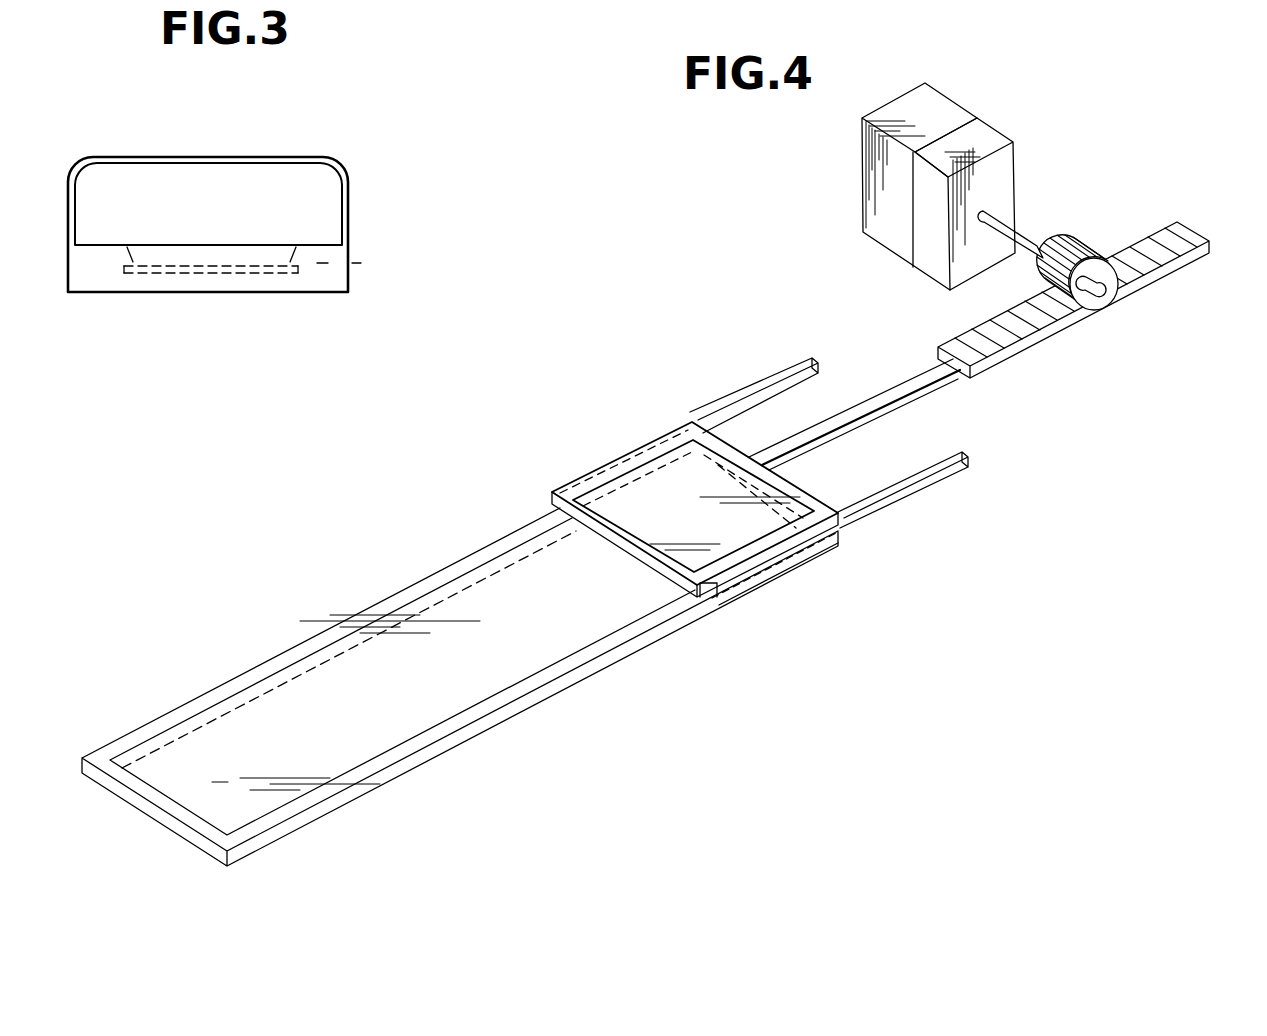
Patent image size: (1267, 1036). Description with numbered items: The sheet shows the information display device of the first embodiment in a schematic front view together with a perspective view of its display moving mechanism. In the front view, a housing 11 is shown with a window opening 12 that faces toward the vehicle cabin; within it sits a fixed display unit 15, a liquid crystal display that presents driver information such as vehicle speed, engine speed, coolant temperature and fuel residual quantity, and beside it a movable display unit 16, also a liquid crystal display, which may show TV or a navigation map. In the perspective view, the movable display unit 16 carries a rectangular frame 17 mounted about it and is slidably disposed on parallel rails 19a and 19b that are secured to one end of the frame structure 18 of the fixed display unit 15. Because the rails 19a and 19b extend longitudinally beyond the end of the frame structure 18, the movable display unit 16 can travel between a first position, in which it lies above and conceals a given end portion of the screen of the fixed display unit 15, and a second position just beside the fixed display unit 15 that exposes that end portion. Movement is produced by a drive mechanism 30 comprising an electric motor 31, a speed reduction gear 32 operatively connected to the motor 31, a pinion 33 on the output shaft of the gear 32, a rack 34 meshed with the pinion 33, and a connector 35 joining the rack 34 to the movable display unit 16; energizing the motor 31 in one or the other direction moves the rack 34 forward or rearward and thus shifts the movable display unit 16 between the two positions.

In FIG. 3, the housing 11 is at (167, 157).
In FIG. 3, the window opening 12 is at (270, 173).
In FIG. 3, the fixed display unit 15 is at (166, 276).
In FIG. 4, the fixed display unit 15 is at (302, 751).
In FIG. 3, the movable display unit 16 is at (333, 263).
In FIG. 4, the movable display unit 16 is at (648, 532).
In FIG. 4, the rectangular frame 17 is at (763, 540).
In FIG. 4, the frame structure 18 is at (280, 656).
In FIG. 4, the rail 19a is at (756, 383).
In FIG. 4, the rail 19b is at (893, 498).
In FIG. 4, the drive mechanism 30 is at (1080, 142).
In FIG. 4, the electric motor 31 is at (935, 97).
In FIG. 4, the speed reduction gear 32 is at (995, 130).
In FIG. 4, the pinion 33 is at (1075, 248).
In FIG. 4, the rack 34 is at (1160, 273).
In FIG. 4, the connector 35 is at (933, 390).